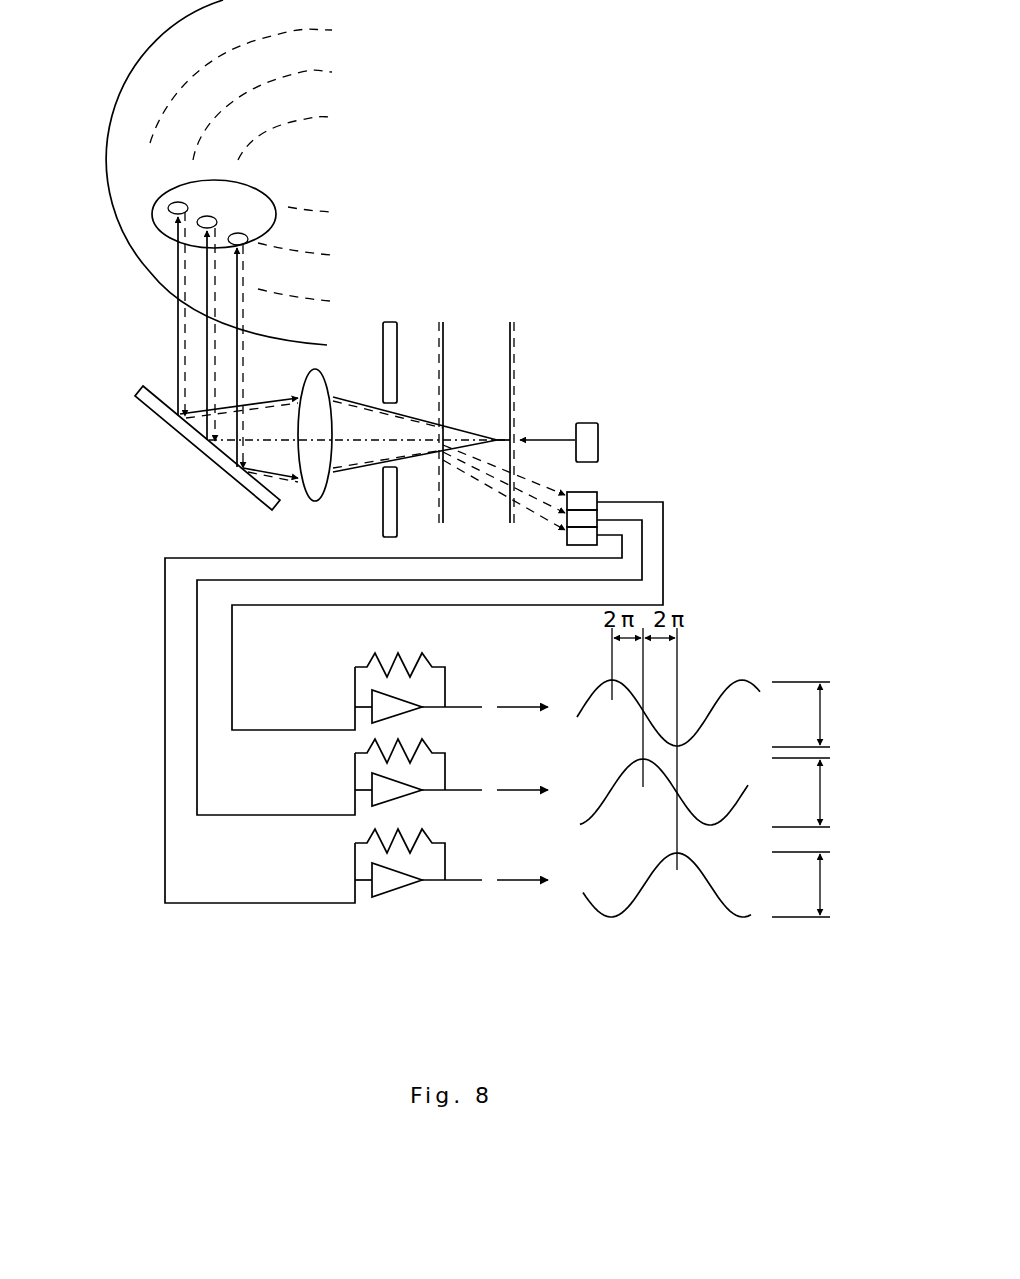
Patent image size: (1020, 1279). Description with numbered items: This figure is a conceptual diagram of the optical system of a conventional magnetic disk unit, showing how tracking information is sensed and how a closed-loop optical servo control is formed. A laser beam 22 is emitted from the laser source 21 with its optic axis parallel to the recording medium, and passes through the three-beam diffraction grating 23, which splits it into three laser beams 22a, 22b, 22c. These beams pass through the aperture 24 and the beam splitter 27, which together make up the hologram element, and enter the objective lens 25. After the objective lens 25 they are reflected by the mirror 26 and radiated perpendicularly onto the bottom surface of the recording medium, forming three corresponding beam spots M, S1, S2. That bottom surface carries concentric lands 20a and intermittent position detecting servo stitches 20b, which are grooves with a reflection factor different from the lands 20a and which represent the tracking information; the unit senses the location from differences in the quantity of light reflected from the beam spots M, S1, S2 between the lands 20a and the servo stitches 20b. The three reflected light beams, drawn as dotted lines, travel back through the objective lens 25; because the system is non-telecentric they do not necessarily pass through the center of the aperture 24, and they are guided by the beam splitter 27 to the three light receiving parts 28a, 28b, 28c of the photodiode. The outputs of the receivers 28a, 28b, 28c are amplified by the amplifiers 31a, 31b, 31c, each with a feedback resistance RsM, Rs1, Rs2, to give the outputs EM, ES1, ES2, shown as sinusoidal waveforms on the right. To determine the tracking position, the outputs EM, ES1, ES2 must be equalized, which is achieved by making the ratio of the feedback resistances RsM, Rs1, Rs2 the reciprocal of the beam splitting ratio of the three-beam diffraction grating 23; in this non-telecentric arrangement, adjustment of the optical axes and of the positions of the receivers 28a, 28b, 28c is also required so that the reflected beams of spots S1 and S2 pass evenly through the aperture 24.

The lands 20a is at (310, 50).
The position detecting servo stitches 20b is at (310, 118).
The laser source 21 is at (590, 437).
The laser beam 22 is at (552, 438).
The laser beam 22a is at (207, 330).
The laser beam 22b is at (243, 318).
The laser beam 22c is at (178, 306).
The 3-beam diffraction grating 23 is at (518, 410).
The aperture 24 is at (375, 480).
The objective lens 25 is at (313, 490).
The mirror 26 is at (217, 467).
The beam splitter 27 is at (437, 400).
The light receiving part 28a is at (588, 498).
The light receiving part 28b is at (582, 518).
The light receiving part 28c is at (582, 536).
The amplifier 31a is at (370, 787).
The amplifier 31b is at (380, 897).
The amplifier 31c is at (370, 700).
The feedback resistance Rs1 is at (435, 835).
The feedback resistance Rs2 is at (458, 645).
The feedback resistance RsM is at (452, 737).
The beam spot S1 is at (243, 232).
The beam spot S2 is at (167, 208).
The beam spot M is at (203, 213).
The output ES1 is at (735, 884).
The output ES2 is at (732, 713).
The output EM is at (727, 792).